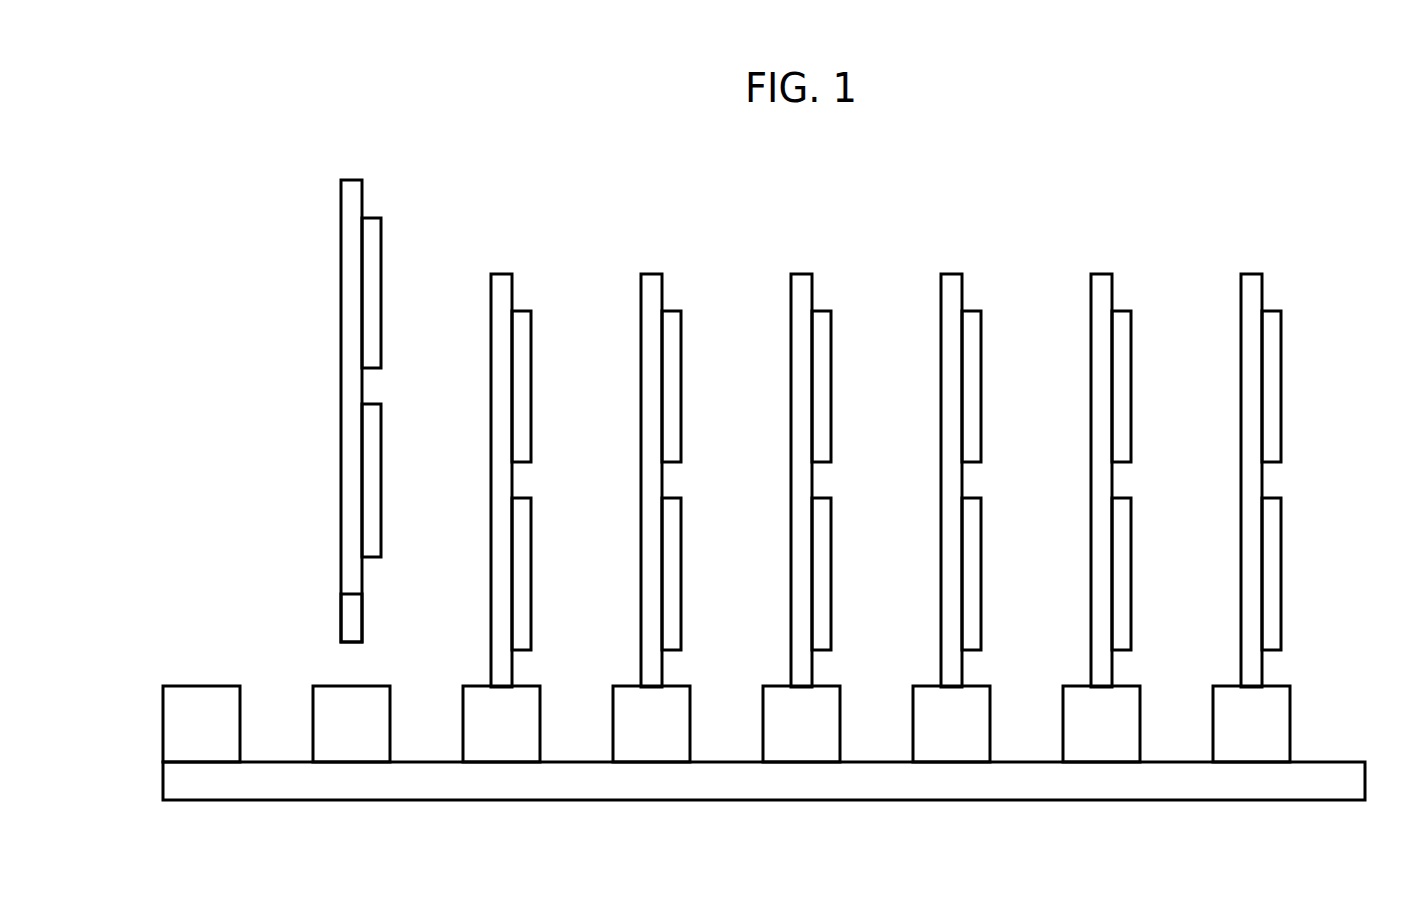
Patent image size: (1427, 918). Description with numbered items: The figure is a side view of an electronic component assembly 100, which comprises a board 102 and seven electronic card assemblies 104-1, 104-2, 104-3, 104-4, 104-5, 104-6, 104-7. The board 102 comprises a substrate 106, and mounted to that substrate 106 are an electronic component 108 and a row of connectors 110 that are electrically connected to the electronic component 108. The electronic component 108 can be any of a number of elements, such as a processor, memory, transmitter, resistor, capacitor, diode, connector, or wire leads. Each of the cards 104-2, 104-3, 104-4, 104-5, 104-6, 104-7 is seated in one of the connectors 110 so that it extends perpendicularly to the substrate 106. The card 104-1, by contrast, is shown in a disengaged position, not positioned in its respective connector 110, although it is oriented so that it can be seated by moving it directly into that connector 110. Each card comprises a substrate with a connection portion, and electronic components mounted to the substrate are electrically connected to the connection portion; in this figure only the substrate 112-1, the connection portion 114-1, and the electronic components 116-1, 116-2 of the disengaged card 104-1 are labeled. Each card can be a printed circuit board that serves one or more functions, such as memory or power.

The electronic component assembly 100 is at (1025, 143).
The board 102 is at (764, 821).
The electronic card assembly 104-1 is at (356, 375).
The electronic card assembly 104-2 is at (512, 274).
The electronic card assembly 104-3 is at (708, 446).
The electronic card assembly 104-4 is at (858, 446).
The electronic card assembly 104-5 is at (1008, 446).
The electronic card assembly 104-6 is at (1158, 446).
The electronic card assembly 104-7 is at (1308, 446).
The substrate 106 is at (932, 800).
The electronic component 108 is at (201, 724).
The connector 110 is at (801, 724).
The substrate 112-1 is at (342, 388).
The connection portion 114-1 is at (342, 620).
The electronic component 116-1 is at (381, 480).
The electronic component 116-2 is at (381, 280).